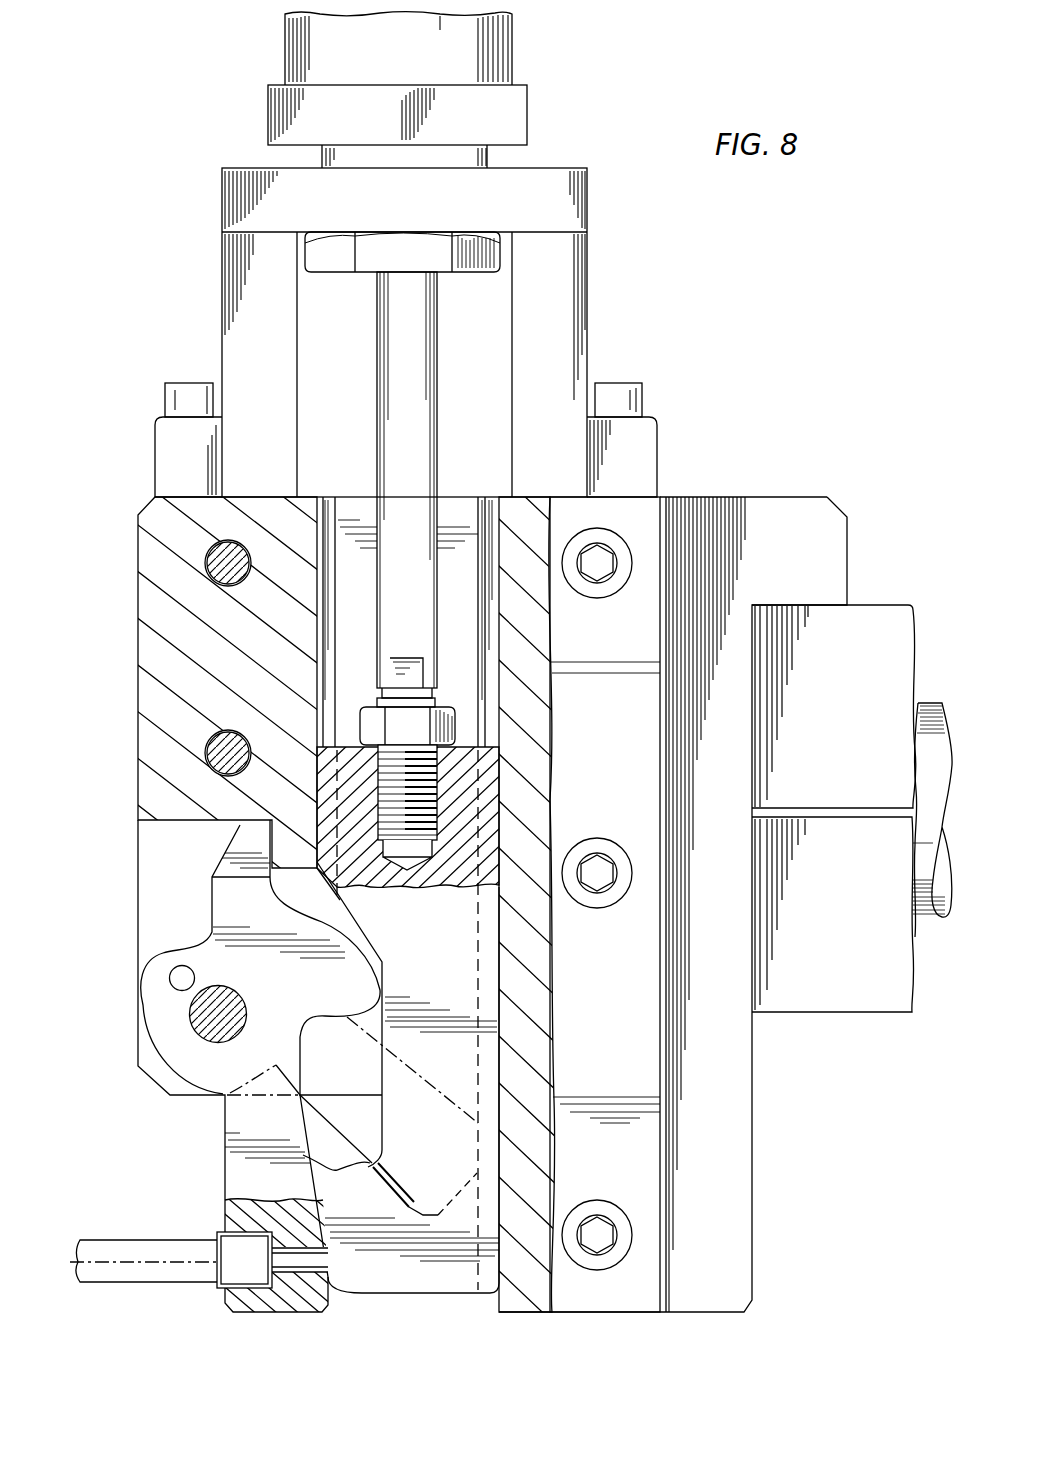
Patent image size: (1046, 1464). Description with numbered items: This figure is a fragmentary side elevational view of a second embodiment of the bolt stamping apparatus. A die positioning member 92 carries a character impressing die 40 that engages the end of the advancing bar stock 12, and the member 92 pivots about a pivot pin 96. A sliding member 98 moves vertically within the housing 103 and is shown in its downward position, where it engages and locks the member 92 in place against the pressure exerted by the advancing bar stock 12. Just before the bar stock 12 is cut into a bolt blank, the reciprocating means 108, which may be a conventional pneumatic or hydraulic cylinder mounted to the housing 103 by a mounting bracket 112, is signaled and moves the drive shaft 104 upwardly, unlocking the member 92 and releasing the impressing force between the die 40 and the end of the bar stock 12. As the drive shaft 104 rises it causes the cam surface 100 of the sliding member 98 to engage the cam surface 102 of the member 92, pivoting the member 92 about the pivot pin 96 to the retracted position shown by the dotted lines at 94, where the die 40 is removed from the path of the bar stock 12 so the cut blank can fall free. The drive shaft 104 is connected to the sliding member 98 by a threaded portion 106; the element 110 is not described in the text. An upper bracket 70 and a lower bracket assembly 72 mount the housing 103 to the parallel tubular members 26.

The bar stock 12 is at (118, 1243).
The parallel tubular members 26 is at (932, 707).
The character impressing die 40 is at (385, 1193).
The upper bracket 70 is at (873, 617).
The lower bracket assembly 72 is at (850, 997).
The die positioning member 92 is at (275, 1307).
The retracted position 94 is at (457, 1193).
The pivot pin 96 is at (193, 1015).
The sliding member 98 is at (393, 1283).
The cam surface 100 is at (303, 1155).
The cam surface 102 is at (343, 1017).
The housing 103 is at (147, 587).
The drive shaft 104 is at (423, 400).
The threaded portion 106 is at (388, 777).
The reciprocating means 108 is at (516, 46).
The piston rod 110 is at (303, 38).
The mounting bracket 112 is at (573, 265).